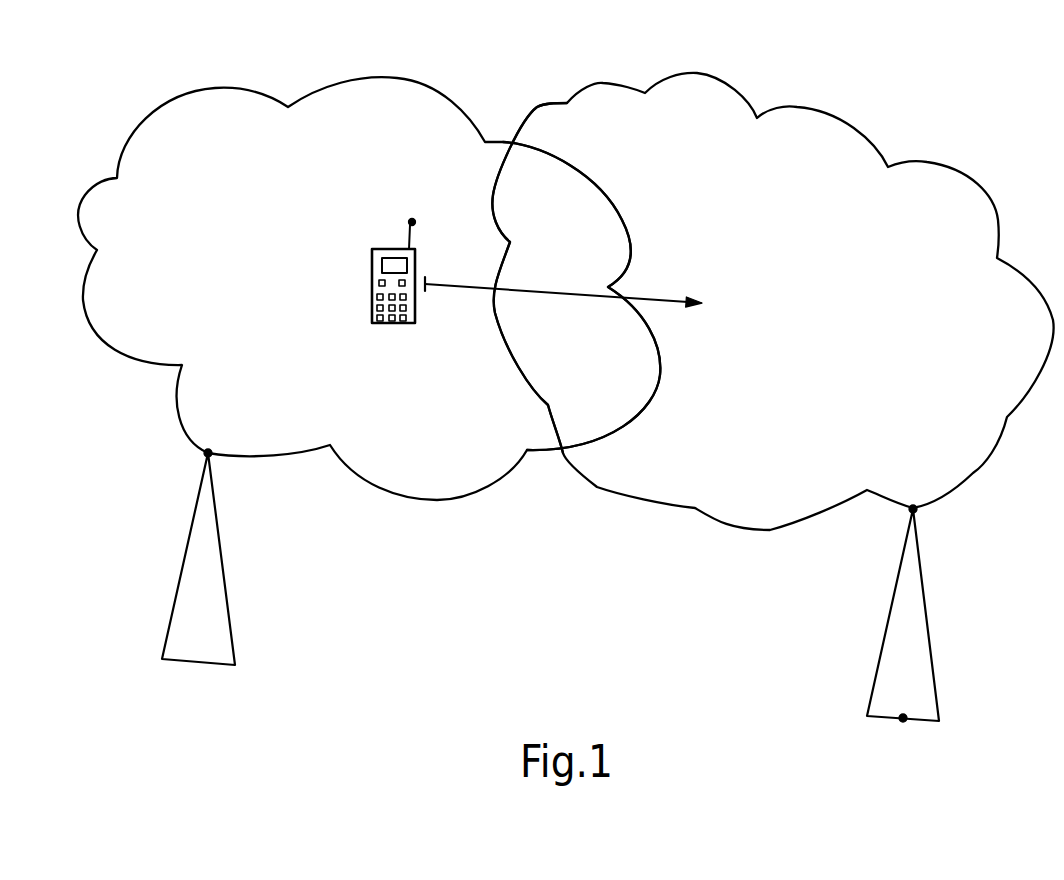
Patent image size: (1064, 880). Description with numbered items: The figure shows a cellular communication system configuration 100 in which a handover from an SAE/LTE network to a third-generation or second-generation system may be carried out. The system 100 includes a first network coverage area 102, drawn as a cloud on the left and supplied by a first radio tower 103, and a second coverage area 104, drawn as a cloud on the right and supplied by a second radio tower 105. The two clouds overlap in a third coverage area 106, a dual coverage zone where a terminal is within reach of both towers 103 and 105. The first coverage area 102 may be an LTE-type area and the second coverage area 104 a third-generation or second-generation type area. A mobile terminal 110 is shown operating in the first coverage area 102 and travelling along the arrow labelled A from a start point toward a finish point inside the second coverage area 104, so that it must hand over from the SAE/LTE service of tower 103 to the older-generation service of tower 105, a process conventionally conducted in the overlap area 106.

The cellular communication system configuration 100 is at (942, 137).
The first network coverage area 102 is at (168, 297).
The second coverage area 104 is at (988, 348).
The third coverage area 106 is at (553, 188).
The first radio tower 103 is at (225, 562).
The second radio tower 105 is at (928, 620).
The mobile terminal 110 is at (385, 325).